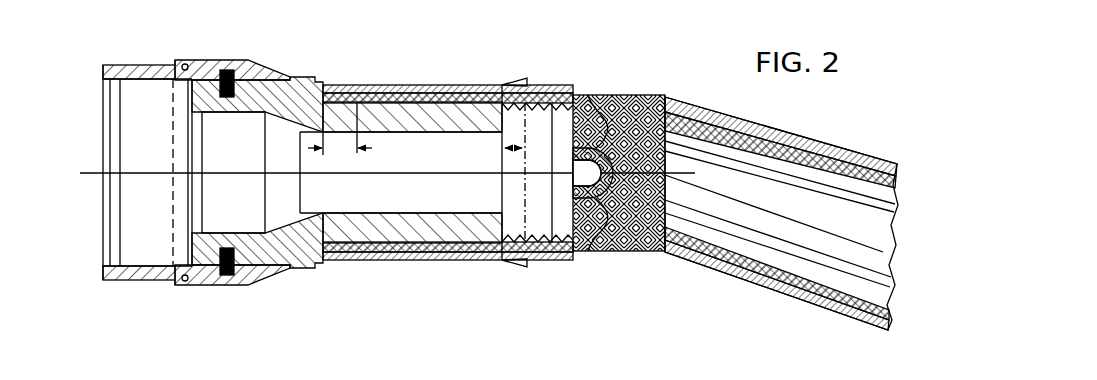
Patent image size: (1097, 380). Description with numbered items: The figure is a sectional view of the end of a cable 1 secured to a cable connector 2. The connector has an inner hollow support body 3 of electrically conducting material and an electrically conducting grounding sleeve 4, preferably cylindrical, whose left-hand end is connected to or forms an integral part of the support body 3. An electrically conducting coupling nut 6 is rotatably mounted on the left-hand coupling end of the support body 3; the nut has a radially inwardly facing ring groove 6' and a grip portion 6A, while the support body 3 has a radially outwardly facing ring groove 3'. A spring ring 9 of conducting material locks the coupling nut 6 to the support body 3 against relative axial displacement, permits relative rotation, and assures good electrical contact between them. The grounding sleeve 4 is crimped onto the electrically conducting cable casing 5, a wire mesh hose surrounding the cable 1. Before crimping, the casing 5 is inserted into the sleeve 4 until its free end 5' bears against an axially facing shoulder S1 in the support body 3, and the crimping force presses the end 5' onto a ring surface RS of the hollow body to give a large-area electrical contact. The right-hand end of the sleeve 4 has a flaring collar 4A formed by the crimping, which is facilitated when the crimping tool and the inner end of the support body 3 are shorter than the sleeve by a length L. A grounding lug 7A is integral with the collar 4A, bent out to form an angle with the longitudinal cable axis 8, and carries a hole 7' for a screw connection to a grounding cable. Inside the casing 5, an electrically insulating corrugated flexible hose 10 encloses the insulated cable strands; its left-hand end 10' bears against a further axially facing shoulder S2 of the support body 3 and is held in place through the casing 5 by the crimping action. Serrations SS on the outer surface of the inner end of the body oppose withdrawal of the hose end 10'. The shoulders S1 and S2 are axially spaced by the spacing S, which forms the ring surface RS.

The cable 1 is at (756, 292).
The cable connector 2 is at (418, 63).
The inner hollow support body 3 is at (257, 147).
The radially outwardly facing ring groove 3' is at (233, 165).
The grounding sleeve 4 is at (423, 261).
The flaring collar 4A is at (520, 264).
The electrically conducting cable casing 5 is at (512, 146).
The free end of the casing 5' is at (345, 90).
The coupling nut 6 is at (147, 190).
The radially inwardly facing ring groove 6' is at (215, 42).
The grip portion 6A is at (208, 280).
The hole 7' is at (619, 135).
The grounding lug 7A is at (592, 257).
The longitudinal cable axis 8 is at (86, 174).
The spring ring 9 is at (240, 70).
The corrugated flexible hose 10 is at (781, 219).
The left-hand end of the hose 10' is at (351, 272).
The spacing S is at (340, 149).
The axially facing shoulder S1 is at (279, 153).
The further axially facing shoulder S2 is at (368, 232).
The serrations SS is at (423, 232).
The ring surface RS is at (358, 137).
The length L is at (507, 148).